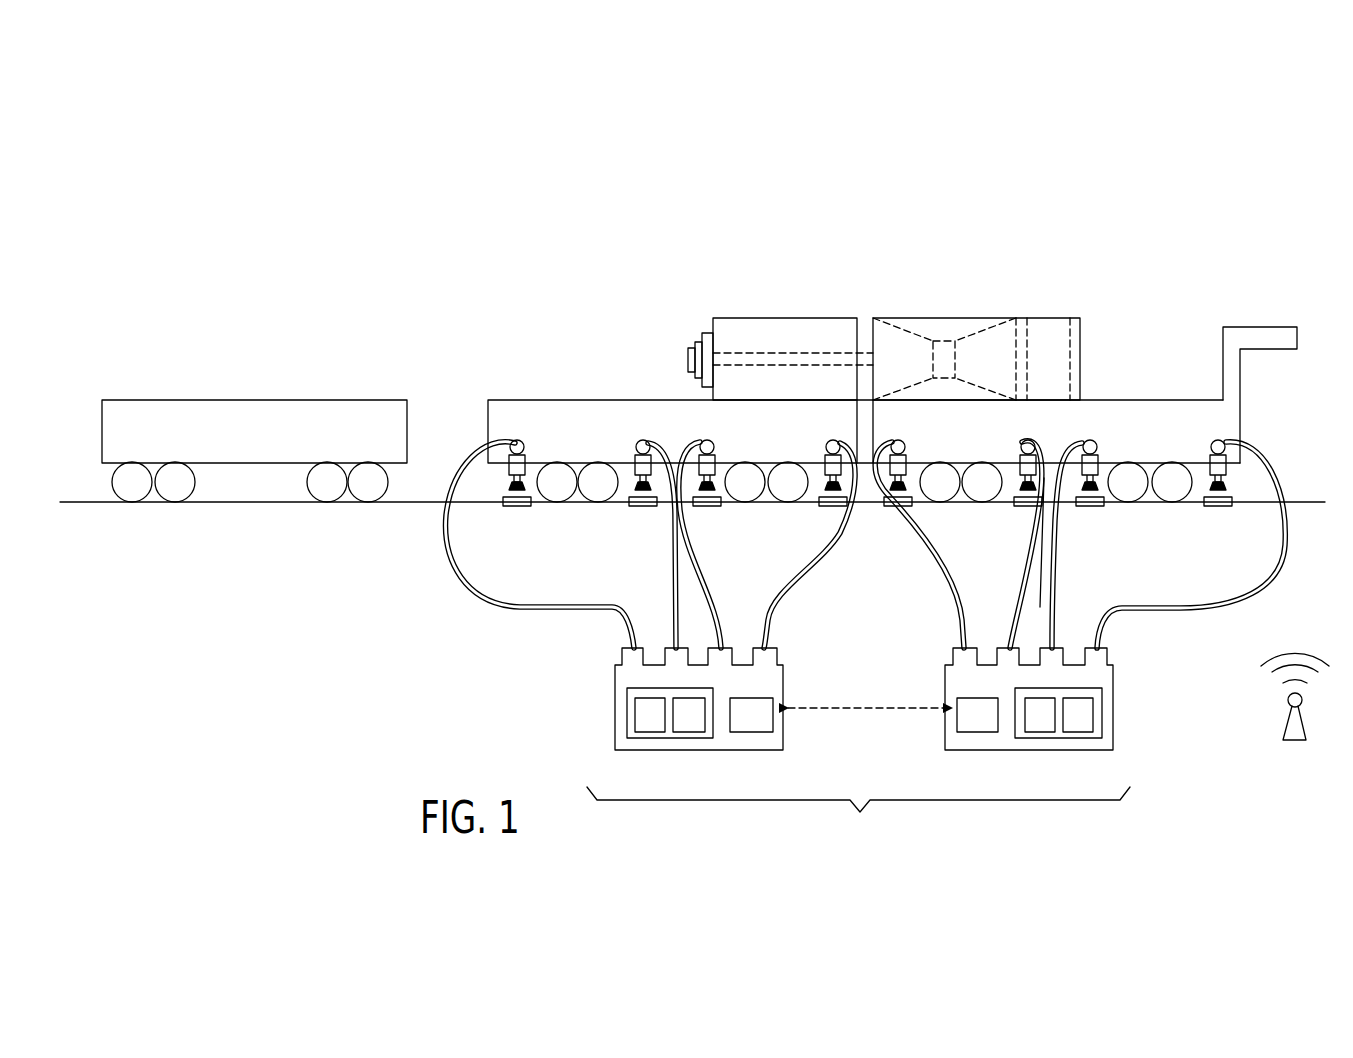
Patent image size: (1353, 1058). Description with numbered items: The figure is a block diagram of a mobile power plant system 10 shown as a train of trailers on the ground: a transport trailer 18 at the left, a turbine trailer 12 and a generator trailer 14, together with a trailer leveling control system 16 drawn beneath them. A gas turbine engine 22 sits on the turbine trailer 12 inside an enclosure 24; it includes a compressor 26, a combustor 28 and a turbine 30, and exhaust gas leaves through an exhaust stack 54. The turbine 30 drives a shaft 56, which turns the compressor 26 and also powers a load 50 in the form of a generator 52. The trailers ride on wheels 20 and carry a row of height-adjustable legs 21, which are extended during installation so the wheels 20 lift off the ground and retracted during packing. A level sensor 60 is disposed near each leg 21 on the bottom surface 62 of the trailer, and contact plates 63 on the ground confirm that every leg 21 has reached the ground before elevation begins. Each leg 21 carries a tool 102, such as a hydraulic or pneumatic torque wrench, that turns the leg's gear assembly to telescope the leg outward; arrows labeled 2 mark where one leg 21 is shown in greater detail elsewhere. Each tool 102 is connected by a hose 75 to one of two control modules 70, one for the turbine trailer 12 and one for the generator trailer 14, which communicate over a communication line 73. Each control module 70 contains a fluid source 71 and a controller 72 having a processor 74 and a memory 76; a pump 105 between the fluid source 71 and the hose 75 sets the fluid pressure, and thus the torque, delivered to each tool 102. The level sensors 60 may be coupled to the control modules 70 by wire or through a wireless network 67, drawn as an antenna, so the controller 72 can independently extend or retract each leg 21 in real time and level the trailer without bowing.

The section view arrows 2 is at (1052, 445).
The mobile power plant system 10 is at (1145, 143).
The turbine trailer 12 is at (1128, 382).
The generator trailer 14 is at (566, 368).
The trailer leveling control system 16 is at (858, 816).
The transport trailer 18 is at (255, 362).
The wheels 20 is at (168, 488).
The height-adjustable legs 21 is at (497, 480).
The gas turbine engine 22 is at (995, 315).
The enclosure 24 is at (928, 318).
The compressor 26 is at (907, 337).
The combustor 28 is at (953, 340).
The turbine 30 is at (971, 337).
The load 50 is at (815, 305).
The generator 52 is at (790, 318).
The exhaust stack 54 is at (1073, 365).
The shaft 56 is at (785, 352).
The level sensor 60 is at (508, 447).
The bottom surface 62 is at (506, 462).
The contact plates 63 is at (517, 507).
The remote transmitter 67 is at (1305, 725).
The control modules 70 is at (614, 708).
The fluid source 71 is at (773, 718).
The controller 72 is at (668, 688).
The communication line 73 is at (865, 708).
The processor 74 is at (648, 732).
The hose 75 is at (466, 590).
The memory 76 is at (690, 732).
The tool 102 is at (513, 441).
The pump 105 is at (770, 700).